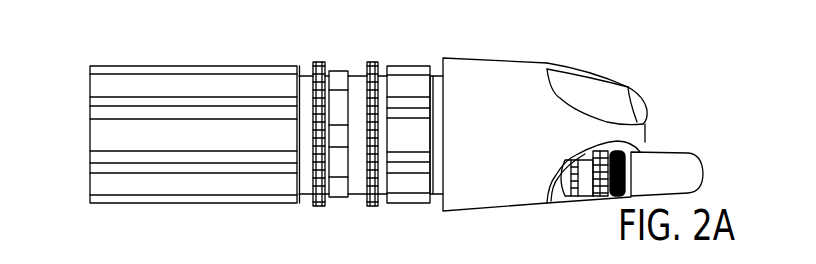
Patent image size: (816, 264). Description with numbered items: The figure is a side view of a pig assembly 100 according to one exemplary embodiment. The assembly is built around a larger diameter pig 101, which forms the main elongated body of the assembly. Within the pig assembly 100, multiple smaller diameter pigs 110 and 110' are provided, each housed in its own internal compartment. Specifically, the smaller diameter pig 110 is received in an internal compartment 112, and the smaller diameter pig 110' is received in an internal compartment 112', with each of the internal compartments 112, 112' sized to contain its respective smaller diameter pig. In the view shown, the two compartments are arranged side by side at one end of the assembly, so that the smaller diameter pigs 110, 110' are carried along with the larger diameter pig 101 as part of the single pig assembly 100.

The pig assembly 100 is at (46, 78).
The larger diameter pig 101 is at (128, 203).
The smaller diameter pig 110 is at (622, 94).
The internal compartment 112 is at (662, 105).
The smaller diameter pig 110' is at (669, 157).
The internal compartment 112' is at (593, 196).